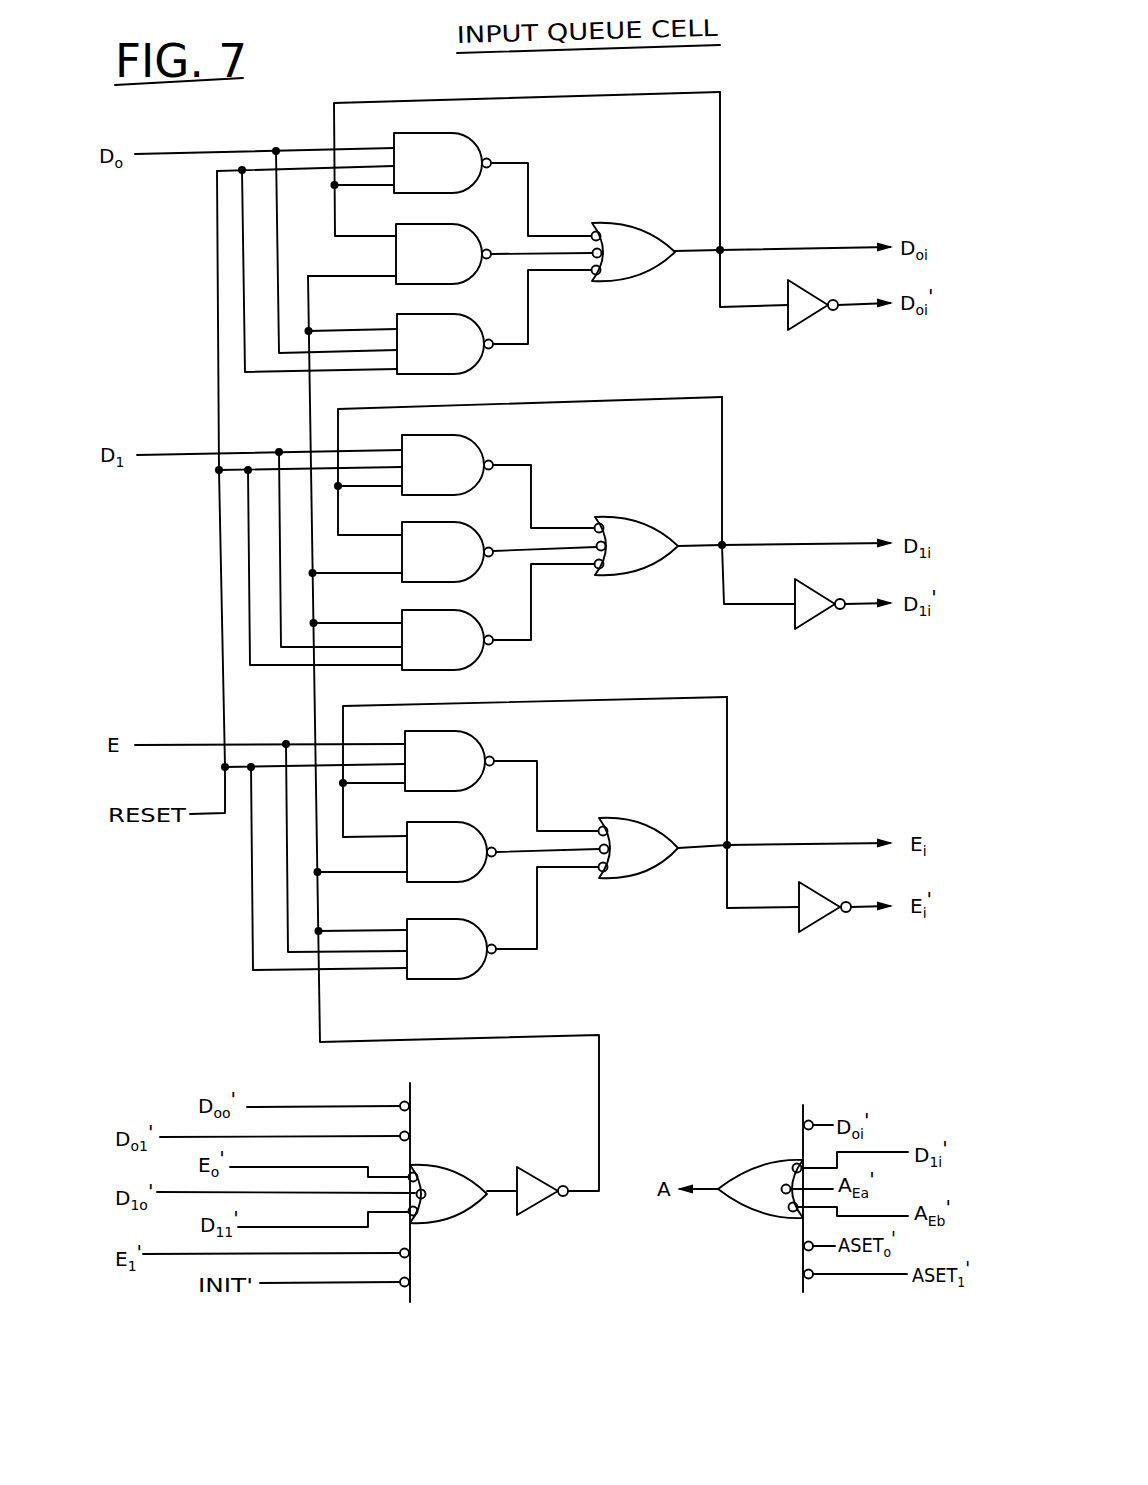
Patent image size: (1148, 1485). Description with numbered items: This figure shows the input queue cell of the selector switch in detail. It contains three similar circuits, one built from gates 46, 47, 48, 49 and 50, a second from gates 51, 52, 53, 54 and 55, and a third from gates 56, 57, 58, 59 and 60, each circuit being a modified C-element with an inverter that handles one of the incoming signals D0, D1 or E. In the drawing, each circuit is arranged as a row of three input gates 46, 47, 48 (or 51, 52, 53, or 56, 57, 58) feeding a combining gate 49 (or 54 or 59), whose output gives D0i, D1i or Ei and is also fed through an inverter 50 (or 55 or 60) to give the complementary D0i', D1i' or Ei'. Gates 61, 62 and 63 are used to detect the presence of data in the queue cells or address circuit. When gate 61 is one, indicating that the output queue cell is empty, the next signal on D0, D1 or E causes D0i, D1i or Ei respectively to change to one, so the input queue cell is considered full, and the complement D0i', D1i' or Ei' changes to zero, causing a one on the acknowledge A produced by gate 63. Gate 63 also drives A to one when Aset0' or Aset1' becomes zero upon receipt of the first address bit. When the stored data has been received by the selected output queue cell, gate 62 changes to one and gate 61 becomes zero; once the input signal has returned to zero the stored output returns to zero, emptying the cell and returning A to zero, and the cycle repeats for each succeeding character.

The gate 46 is at (477, 143).
The gate 47 is at (471, 272).
The gate 48 is at (482, 357).
The gate 49 is at (625, 282).
The gate 50 is at (807, 320).
The gate 51 is at (480, 445).
The gate 52 is at (470, 578).
The gate 53 is at (480, 655).
The gate 54 is at (625, 575).
The gate 55 is at (818, 632).
The gate 56 is at (483, 743).
The gate 57 is at (475, 878).
The gate 58 is at (485, 965).
The gate 59 is at (642, 878).
The gate 60 is at (818, 925).
The gate 61 is at (547, 1203).
The gate 62 is at (438, 1167).
The gate 63 is at (747, 1160).